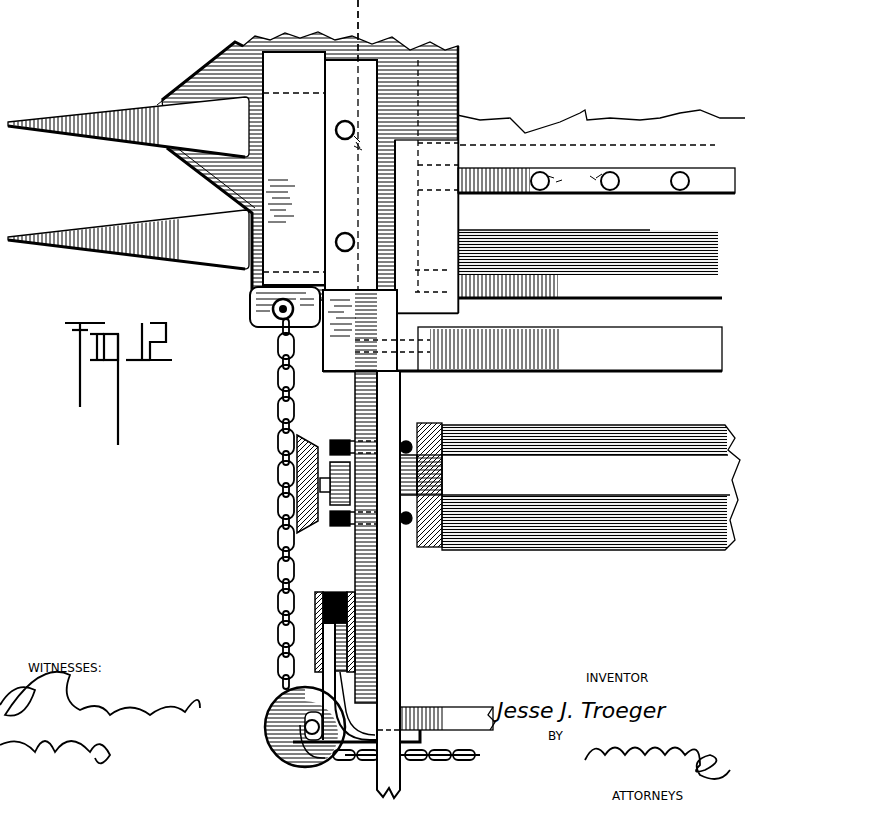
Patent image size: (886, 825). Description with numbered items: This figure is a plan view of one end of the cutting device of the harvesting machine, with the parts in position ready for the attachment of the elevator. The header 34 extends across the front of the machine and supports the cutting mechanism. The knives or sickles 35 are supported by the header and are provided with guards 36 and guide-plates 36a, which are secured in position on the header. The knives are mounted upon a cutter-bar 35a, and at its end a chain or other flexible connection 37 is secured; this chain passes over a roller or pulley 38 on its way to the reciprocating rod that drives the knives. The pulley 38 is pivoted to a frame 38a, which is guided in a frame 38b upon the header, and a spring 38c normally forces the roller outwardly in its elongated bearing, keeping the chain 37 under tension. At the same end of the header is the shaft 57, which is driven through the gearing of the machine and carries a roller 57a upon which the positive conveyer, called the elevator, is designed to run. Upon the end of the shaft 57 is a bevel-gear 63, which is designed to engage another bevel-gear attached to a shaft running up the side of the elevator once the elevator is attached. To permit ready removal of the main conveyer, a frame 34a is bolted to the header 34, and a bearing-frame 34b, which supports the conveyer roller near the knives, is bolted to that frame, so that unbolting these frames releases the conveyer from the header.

The header 34 is at (340, 340).
The frame 34a is at (372, 585).
The bearing-frame 34b is at (393, 642).
The knives or sickles 35 is at (215, 82).
The cutter-bar 35a is at (263, 327).
The guards 36 is at (157, 123).
The guide-plates 36a is at (311, 168).
The chain or flexible connection 37 is at (277, 417).
The pulley 38 is at (273, 734).
The frame 38a is at (330, 683).
The frame 38b is at (320, 594).
The spring 38c is at (348, 572).
The shaft 57 is at (322, 465).
The roller 57a is at (518, 425).
The bevel-gear 63 is at (306, 430).